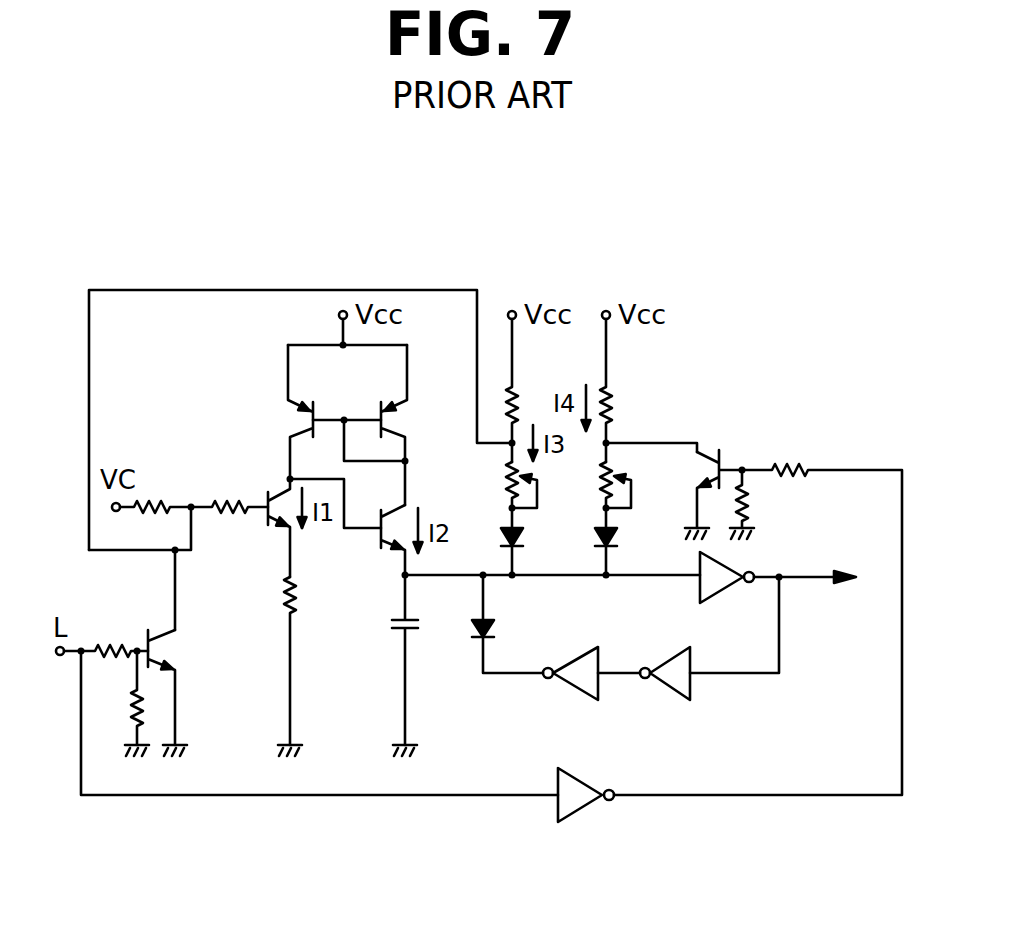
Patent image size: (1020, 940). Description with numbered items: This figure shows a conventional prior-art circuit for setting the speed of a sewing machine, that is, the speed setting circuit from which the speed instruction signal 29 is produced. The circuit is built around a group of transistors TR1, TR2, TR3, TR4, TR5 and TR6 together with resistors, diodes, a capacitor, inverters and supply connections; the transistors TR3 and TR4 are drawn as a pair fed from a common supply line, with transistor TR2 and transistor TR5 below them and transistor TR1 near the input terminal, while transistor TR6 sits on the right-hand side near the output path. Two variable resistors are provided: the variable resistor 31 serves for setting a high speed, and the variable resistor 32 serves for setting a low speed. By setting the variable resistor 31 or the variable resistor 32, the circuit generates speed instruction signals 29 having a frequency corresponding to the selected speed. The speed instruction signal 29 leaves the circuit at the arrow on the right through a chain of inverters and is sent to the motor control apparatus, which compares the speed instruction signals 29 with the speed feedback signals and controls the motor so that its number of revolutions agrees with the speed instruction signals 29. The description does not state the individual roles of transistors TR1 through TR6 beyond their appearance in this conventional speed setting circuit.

The transistor TR1 is at (168, 652).
The transistor TR2 is at (283, 532).
The transistor TR3 is at (300, 418).
The transistor TR4 is at (396, 416).
The transistor TR5 is at (395, 546).
The transistor TR6 is at (714, 475).
The speed instruction signal 29 is at (810, 582).
The variable resistor for setting a high speed 31 is at (504, 480).
The variable resistor for setting a low speed 32 is at (598, 503).